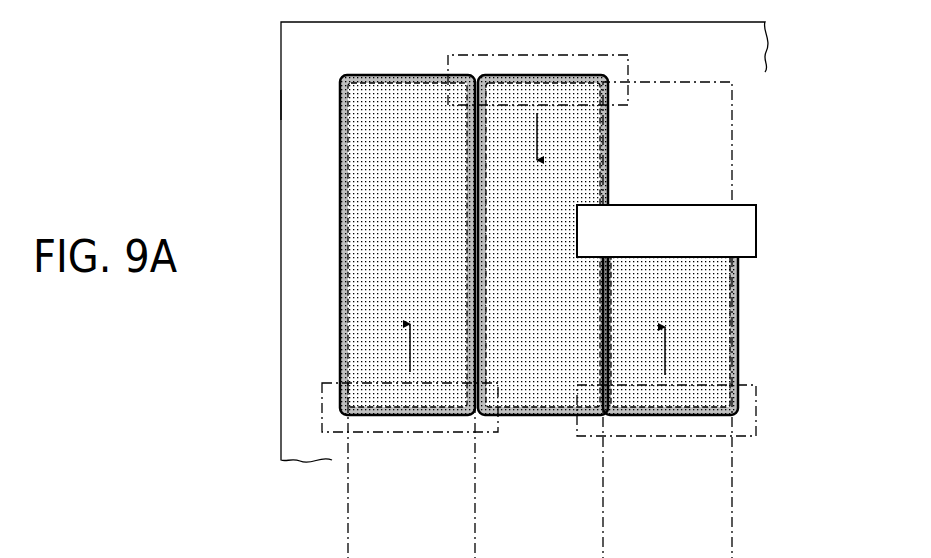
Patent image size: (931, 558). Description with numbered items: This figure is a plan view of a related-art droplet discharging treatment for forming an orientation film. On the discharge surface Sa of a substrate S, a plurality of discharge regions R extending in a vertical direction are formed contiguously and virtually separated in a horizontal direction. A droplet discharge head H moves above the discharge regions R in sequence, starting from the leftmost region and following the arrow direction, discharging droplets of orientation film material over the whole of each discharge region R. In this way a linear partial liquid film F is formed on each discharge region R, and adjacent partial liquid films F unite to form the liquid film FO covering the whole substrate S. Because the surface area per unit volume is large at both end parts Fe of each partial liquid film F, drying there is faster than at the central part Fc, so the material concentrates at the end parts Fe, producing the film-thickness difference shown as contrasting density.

The substrate S is at (281, 62).
The discharge surface Sa is at (281, 105).
The partial liquid film F is at (360, 151).
The end part Fe is at (341, 250).
The liquid film FO is at (340, 340).
The central part Fc is at (410, 228).
The discharge region R is at (340, 101).
The droplet discharge head H is at (448, 66).